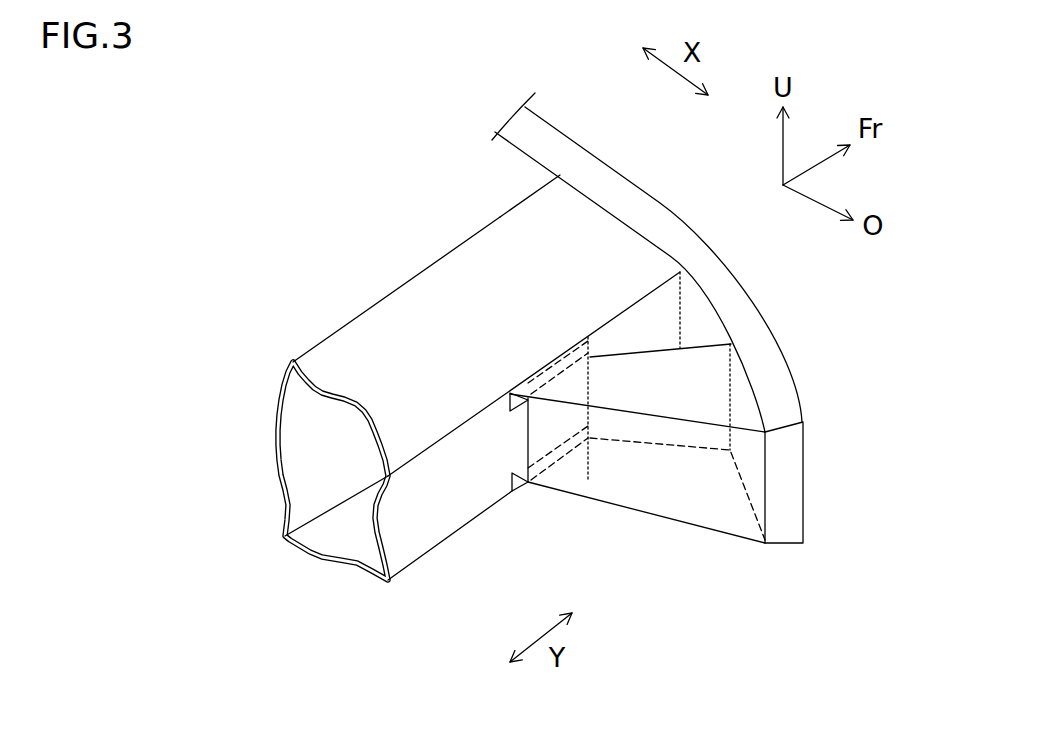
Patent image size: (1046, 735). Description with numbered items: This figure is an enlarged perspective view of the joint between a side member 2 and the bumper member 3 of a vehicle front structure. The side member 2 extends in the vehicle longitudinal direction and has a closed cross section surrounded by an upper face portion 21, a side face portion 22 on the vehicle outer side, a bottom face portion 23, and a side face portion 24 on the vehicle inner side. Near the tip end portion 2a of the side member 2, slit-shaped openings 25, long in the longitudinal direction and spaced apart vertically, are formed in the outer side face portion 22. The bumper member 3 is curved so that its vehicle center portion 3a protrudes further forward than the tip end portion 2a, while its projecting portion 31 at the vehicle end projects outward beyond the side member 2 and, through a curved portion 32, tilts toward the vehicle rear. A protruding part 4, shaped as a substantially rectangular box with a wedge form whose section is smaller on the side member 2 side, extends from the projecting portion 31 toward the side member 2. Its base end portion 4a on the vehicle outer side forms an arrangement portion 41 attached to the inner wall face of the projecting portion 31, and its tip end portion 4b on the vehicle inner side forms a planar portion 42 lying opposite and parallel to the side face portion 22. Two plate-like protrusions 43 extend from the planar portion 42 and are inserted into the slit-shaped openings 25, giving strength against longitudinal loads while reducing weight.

The side member 2 is at (442, 363).
The tip end portion 2a is at (598, 218).
The upper face portion 21 is at (457, 283).
The side face portion 22 is at (425, 545).
The bottom face portion 23 is at (348, 528).
The side face portion 24 is at (308, 430).
The slit-shaped opening 25 is at (510, 400).
The bumper member 3 is at (687, 230).
The vehicle center portion 3a is at (545, 118).
The projecting portion 31 is at (787, 377).
The curved portion 32 is at (748, 293).
The protruding part 4 is at (660, 424).
The base end portion 4a is at (745, 410).
The tip end portion 4b is at (600, 358).
The arrangement portion 41 is at (740, 357).
The planar portion 42 is at (512, 442).
The protrusion 43 is at (540, 372).